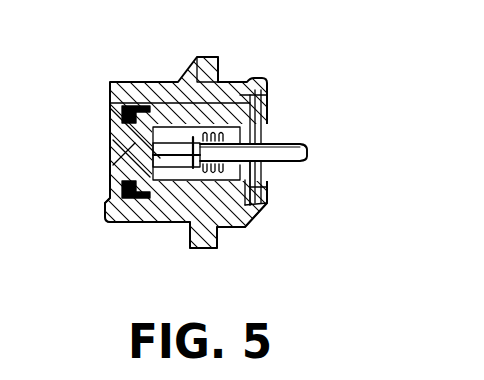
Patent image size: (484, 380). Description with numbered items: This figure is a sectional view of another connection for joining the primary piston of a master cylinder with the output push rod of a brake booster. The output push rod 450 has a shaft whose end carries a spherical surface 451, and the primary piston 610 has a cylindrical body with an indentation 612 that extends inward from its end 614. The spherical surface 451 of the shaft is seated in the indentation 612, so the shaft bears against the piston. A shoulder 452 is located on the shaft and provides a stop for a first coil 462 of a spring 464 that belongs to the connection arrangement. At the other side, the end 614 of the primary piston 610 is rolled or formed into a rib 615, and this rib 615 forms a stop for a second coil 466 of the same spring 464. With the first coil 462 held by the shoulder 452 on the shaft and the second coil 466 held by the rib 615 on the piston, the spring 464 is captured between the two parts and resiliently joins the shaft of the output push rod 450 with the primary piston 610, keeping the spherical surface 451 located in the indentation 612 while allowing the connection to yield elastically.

The primary piston 610 is at (178, 107).
The first coil 462 is at (220, 110).
The spring 464 is at (225, 108).
The rib 615 is at (268, 108).
The output push rod 450 is at (332, 150).
The second coil 466 is at (273, 198).
The end 614 is at (252, 202).
The shoulder 452 is at (180, 226).
The spherical surface 451 is at (118, 165).
The indentation 612 is at (125, 145).